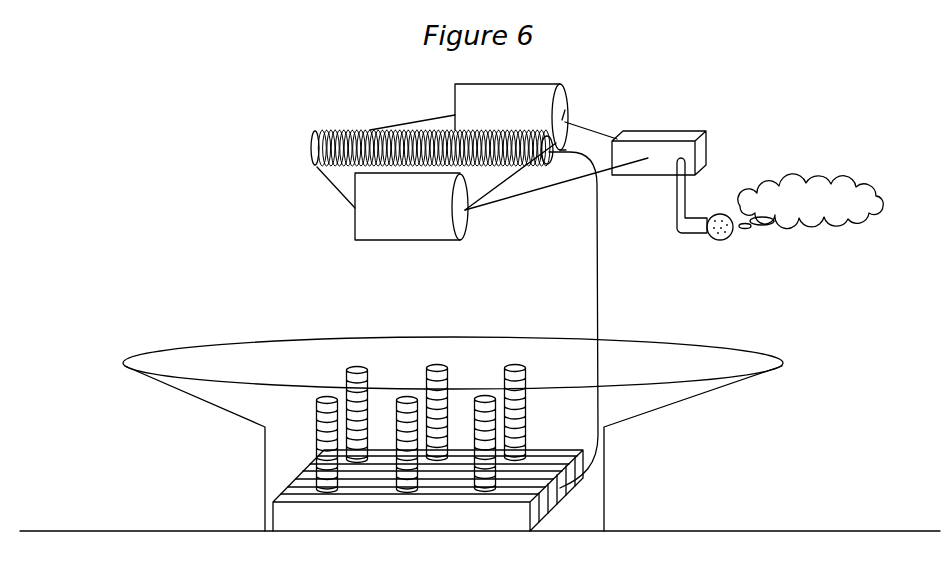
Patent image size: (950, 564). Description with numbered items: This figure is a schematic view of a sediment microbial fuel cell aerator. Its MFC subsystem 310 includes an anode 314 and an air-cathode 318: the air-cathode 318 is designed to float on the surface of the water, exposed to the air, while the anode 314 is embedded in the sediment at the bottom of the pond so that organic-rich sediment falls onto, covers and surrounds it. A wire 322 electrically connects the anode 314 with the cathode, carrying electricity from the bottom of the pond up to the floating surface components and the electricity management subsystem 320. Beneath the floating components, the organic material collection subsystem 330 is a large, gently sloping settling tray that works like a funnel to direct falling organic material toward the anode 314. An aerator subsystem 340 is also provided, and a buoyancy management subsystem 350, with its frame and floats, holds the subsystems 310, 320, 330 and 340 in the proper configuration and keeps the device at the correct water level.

The MFC subsystem 310 is at (299, 388).
The anode 314 is at (428, 448).
The air-cathode 318 is at (416, 161).
The electricity management subsystem 320 is at (585, 157).
The wire 322 is at (601, 320).
The organic material collection subsystem 330 is at (453, 430).
The aerator subsystem 340 is at (780, 208).
The buoyancy management subsystem 350 is at (461, 162).